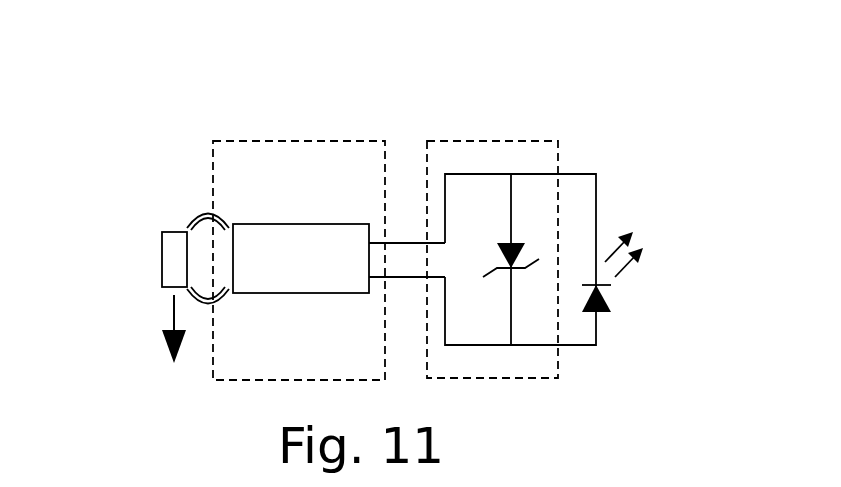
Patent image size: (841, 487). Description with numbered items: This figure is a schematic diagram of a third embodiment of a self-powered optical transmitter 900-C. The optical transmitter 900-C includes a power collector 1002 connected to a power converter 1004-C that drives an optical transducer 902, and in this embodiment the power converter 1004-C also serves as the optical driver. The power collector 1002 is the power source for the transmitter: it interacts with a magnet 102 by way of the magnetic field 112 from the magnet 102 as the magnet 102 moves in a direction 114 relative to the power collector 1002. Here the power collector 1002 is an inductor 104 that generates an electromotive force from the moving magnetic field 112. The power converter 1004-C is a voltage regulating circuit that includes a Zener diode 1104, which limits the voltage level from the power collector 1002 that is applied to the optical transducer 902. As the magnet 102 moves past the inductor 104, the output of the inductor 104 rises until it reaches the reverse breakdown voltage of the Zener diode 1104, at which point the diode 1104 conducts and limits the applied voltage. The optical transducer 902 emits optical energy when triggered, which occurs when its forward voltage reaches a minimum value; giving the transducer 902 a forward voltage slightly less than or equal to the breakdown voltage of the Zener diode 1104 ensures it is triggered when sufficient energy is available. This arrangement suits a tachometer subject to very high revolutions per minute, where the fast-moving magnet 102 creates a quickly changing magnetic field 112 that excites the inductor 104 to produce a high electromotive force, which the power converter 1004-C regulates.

The self-powered optical transmitter 900-C is at (158, 75).
The magnet 102 is at (162, 265).
The magnetic field 112 is at (206, 213).
The direction 114 is at (173, 318).
The inductor 104 is at (285, 224).
The power collector 1002 is at (367, 175).
The power converter 1004-C is at (532, 113).
The Zener diode 1104 is at (510, 240).
The optical transducer 902 is at (607, 302).